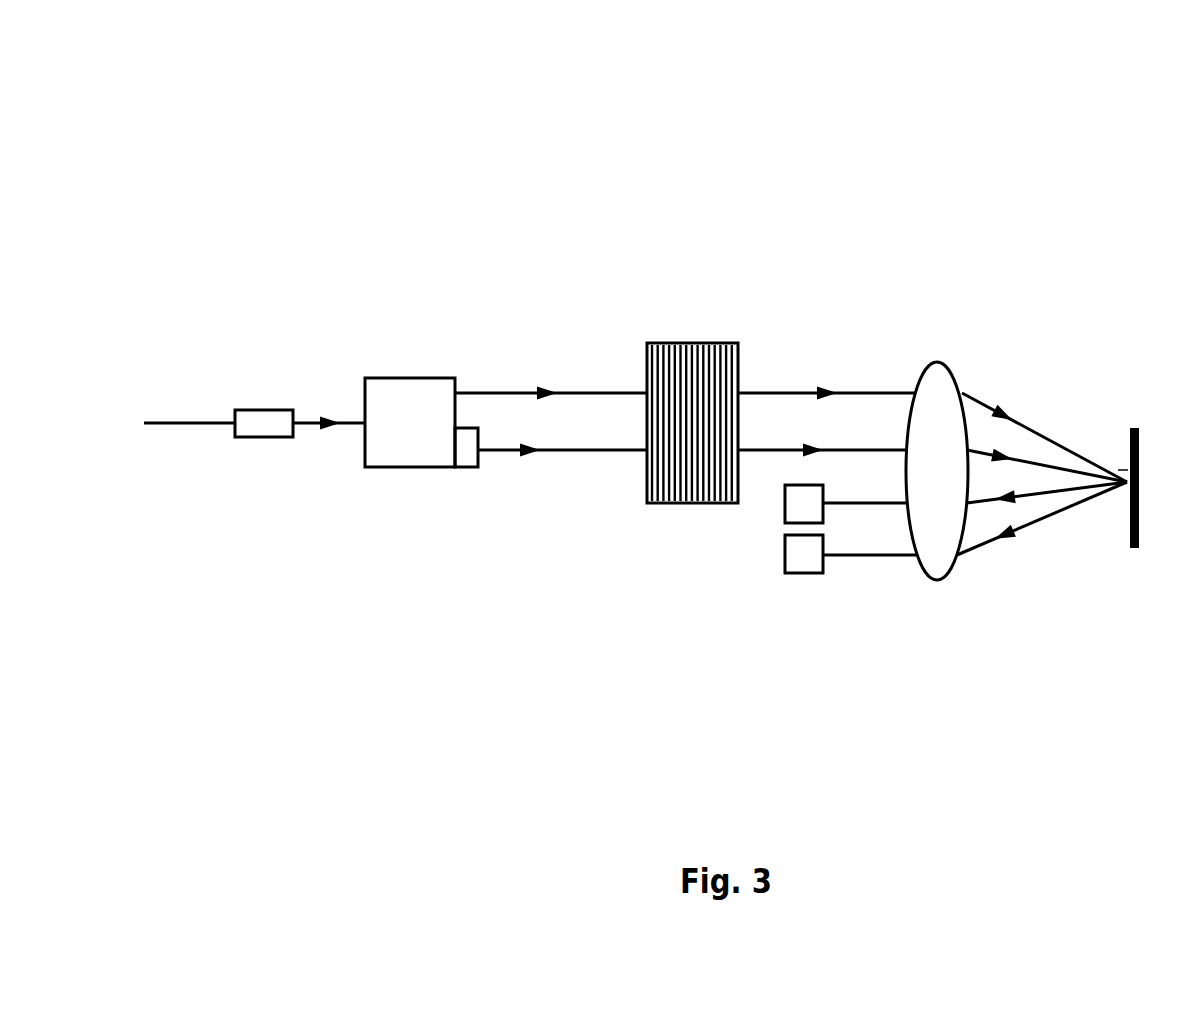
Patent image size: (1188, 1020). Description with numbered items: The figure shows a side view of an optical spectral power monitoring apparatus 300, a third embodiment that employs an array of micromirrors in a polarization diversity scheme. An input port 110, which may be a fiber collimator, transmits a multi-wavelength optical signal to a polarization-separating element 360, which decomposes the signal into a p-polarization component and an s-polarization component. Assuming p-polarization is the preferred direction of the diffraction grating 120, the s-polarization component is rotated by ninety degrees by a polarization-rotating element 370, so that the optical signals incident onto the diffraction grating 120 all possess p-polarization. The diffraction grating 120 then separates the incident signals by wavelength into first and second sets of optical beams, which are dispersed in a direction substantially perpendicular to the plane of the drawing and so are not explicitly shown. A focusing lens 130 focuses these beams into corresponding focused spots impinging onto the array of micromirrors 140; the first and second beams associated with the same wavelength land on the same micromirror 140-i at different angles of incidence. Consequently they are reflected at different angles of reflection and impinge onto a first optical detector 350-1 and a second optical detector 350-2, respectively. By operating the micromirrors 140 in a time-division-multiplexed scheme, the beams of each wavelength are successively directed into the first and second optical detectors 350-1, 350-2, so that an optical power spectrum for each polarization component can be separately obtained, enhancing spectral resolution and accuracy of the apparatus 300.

The optical spectral power monitoring apparatus 300 is at (236, 126).
The input port 110 is at (269, 410).
The polarization-separating element 360 is at (417, 378).
The polarization-rotating element 370 is at (467, 470).
The diffraction grating 120 is at (685, 343).
The focusing lens 130 is at (937, 362).
The array of micromirrors 140 is at (1134, 575).
The micromirror 140-i is at (1128, 470).
The first optical detector 350-1 is at (785, 503).
The second optical detector 350-2 is at (785, 553).